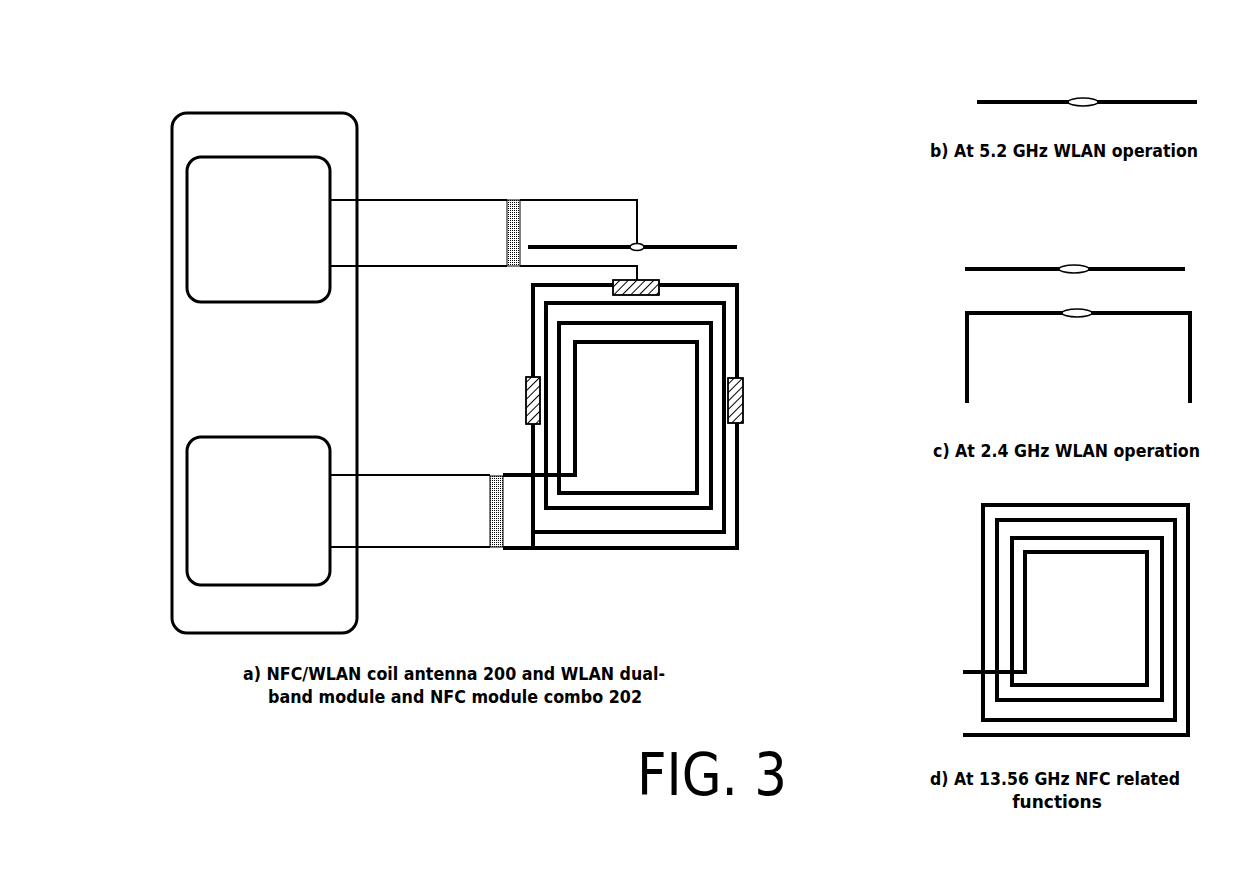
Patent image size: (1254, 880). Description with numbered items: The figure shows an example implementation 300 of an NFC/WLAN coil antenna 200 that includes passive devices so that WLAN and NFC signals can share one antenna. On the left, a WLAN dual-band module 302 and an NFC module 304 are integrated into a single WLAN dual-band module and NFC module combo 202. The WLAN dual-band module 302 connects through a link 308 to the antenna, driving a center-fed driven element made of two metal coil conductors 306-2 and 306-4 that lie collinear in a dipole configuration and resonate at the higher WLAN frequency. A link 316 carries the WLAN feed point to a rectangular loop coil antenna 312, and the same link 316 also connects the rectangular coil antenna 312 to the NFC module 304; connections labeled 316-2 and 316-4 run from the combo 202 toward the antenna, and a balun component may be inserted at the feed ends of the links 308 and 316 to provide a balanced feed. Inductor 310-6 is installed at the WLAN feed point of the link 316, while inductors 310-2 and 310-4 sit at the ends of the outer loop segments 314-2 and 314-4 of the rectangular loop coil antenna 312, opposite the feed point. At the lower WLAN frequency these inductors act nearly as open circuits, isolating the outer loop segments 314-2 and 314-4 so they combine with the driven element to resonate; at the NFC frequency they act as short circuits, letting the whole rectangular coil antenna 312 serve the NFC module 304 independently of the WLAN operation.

The WLAN dual-band module and NFC module combo 202 is at (249, 141).
The WLAN dual-band module 302 is at (242, 260).
The NFC module 304 is at (242, 545).
The link 308 is at (440, 200).
The link 316 is at (440, 266).
The NFC feed line / coupling block 316-2 is at (521, 203).
The NFC feed line / coupling block 316-4 is at (398, 547).
The metal coil conductor 306-2 is at (715, 244).
The metal coil conductor 306-4 is at (549, 244).
The inductor 310-2 is at (526, 395).
The inductor 310-4 is at (743, 403).
The inductor 310-6 is at (659, 280).
The rectangular loop coil antenna 312 is at (619, 426).
The outer loop segment 314-2 is at (533, 340).
The outer loop segment 314-4 is at (737, 333).
The example implementation 300 is at (621, 98).
The NFC/WLAN coil antenna 200 is at (729, 178).